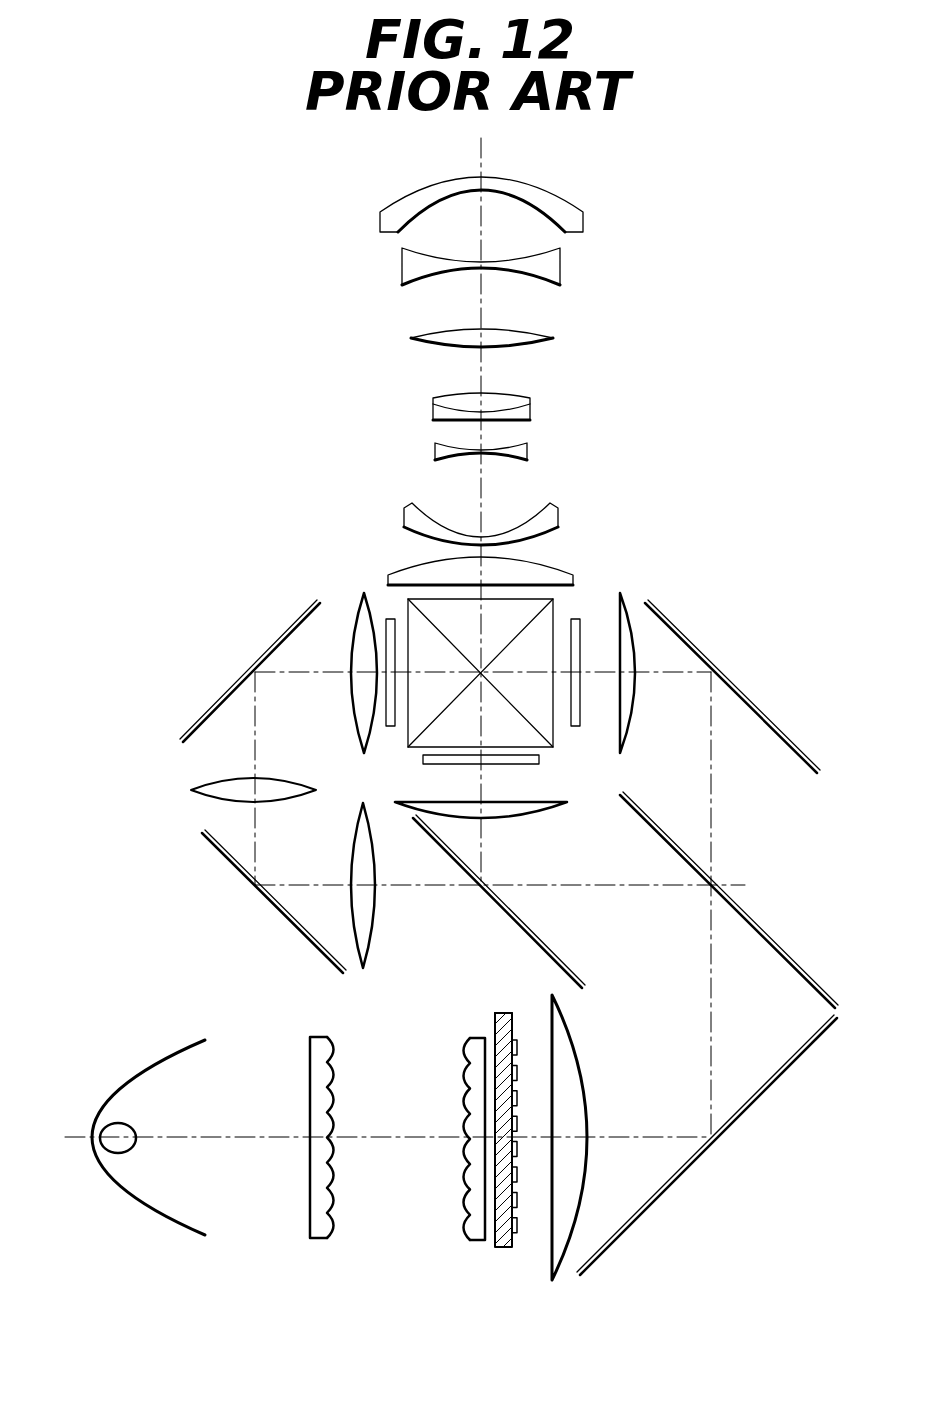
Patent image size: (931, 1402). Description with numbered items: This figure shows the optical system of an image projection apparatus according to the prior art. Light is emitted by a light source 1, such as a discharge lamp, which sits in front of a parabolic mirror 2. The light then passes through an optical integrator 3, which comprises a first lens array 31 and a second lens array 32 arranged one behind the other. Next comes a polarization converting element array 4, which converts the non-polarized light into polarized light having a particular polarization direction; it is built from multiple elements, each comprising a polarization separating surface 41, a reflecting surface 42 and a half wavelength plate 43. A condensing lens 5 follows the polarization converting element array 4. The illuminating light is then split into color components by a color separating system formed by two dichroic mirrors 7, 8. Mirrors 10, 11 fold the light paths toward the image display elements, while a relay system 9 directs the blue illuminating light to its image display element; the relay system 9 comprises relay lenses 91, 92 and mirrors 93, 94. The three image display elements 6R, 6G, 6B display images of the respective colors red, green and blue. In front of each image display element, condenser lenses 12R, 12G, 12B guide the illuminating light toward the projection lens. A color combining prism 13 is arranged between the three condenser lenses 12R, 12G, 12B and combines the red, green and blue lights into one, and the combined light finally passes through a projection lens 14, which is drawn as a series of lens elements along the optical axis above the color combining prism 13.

The light source 1 is at (105, 1145).
The parabolic mirror 2 is at (158, 1216).
The optical integrator 3 is at (395, 1188).
The lens array 31 is at (316, 1242).
The lens array 32 is at (477, 1164).
The polarization converting element array 4 is at (512, 1135).
The polarization separating surface 41 is at (508, 1040).
The reflecting surface 42 is at (503, 1035).
The half wavelength plate 43 is at (514, 1045).
The condensing lens 5 is at (562, 1280).
The image display element 6B is at (391, 728).
The image display element 6R is at (576, 728).
The image display element 6G is at (542, 763).
The dichroic mirror 7 is at (812, 978).
The dichroic mirror 8 is at (577, 968).
The relay system 9 is at (231, 801).
The relay lens 91 is at (251, 903).
The relay lens 92 is at (200, 794).
The mirror 93 is at (218, 853).
The mirror 94 is at (188, 730).
The mirror 10 is at (795, 1065).
The mirror 11 is at (780, 732).
The condenser lens 12B is at (352, 700).
The condenser lens 12R is at (633, 740).
The condenser lens 12G is at (548, 815).
The color combining prism 13 is at (548, 620).
The projection lens 14 is at (367, 190).